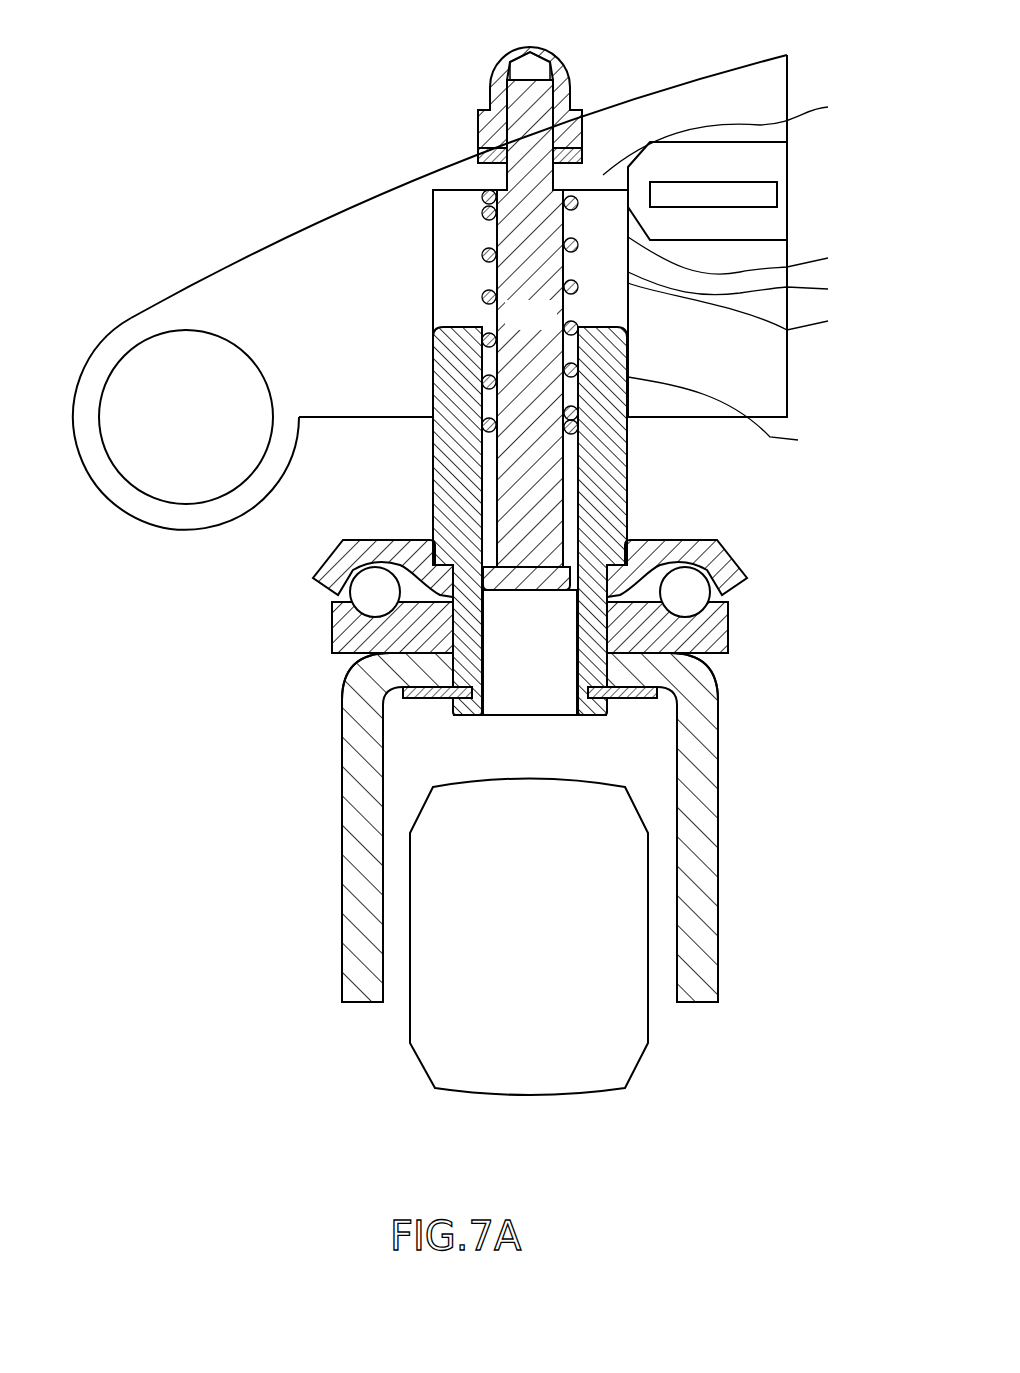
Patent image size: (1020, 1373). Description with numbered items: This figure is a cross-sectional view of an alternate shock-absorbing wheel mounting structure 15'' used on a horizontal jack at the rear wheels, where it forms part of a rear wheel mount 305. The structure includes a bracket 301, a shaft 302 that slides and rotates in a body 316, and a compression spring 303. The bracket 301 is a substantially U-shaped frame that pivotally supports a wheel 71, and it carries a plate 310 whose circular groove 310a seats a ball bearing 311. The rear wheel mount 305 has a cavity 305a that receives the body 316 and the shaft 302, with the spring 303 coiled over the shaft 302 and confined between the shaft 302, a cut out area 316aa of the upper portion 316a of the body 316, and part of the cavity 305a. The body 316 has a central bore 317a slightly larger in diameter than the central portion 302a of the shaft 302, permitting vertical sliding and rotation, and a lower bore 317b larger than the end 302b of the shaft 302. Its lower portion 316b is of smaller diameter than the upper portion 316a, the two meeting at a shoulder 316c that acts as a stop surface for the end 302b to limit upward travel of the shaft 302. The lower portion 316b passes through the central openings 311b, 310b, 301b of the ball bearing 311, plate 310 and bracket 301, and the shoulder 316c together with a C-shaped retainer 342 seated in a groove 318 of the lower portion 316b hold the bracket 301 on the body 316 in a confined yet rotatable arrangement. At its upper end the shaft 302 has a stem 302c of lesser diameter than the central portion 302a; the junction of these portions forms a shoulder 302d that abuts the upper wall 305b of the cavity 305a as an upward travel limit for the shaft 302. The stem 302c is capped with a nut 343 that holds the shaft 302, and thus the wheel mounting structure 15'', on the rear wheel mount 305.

The wheel mounting structure 15'' is at (235, 932).
The wheel 71 is at (650, 1025).
The bracket 301 is at (697, 823).
The central opening of bracket 301b is at (717, 705).
The shaft 302 is at (556, 327).
The central portion of shaft 302a is at (533, 425).
The end of shaft 302b is at (452, 648).
The stem 302c is at (525, 103).
The shoulder 302d is at (500, 187).
The compression spring 303 is at (753, 312).
The rear wheel mount 305 is at (763, 373).
The cavity 305a is at (760, 256).
The upper wall of cavity 305b is at (323, 188).
The plate 310 is at (730, 652).
The circular groove 310a is at (730, 623).
The central opening of plate 310b is at (705, 655).
The ball bearing 311 is at (730, 560).
The central opening of ball bearing 311b is at (455, 580).
The body 316 is at (628, 487).
The upper portion of body 316a is at (745, 417).
The cut out area 316aa is at (488, 402).
The lower portion of body 316b is at (380, 655).
The shoulder 316c is at (484, 562).
The central bore 317a is at (486, 476).
The lower bore 317b is at (512, 698).
The groove 318 is at (488, 700).
The C-shaped retainer 342 is at (402, 694).
The nut 343 is at (571, 96).